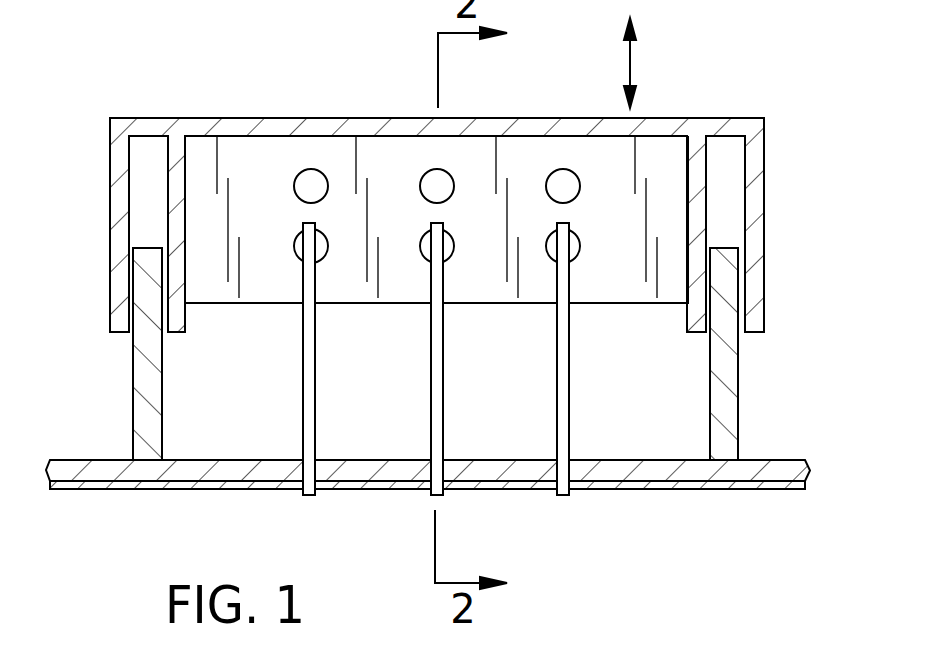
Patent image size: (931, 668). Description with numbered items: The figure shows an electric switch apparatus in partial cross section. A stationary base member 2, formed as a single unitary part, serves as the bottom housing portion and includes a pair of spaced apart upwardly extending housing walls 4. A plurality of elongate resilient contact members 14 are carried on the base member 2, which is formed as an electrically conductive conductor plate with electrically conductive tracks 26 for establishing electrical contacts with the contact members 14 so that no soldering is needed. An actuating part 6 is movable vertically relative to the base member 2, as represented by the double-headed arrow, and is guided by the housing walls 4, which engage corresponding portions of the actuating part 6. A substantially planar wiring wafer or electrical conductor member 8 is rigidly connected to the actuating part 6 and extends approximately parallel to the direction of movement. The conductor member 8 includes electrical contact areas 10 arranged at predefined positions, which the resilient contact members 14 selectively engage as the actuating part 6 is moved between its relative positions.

The stationary base member 2 is at (772, 470).
The electrically conductive tracks 26 is at (786, 489).
The housing walls 4 is at (140, 412).
The actuating part 6 is at (722, 128).
The electrical conductor member 8 is at (270, 178).
The electrical contact areas 10 is at (575, 243).
The resilient contact members 14 is at (437, 413).